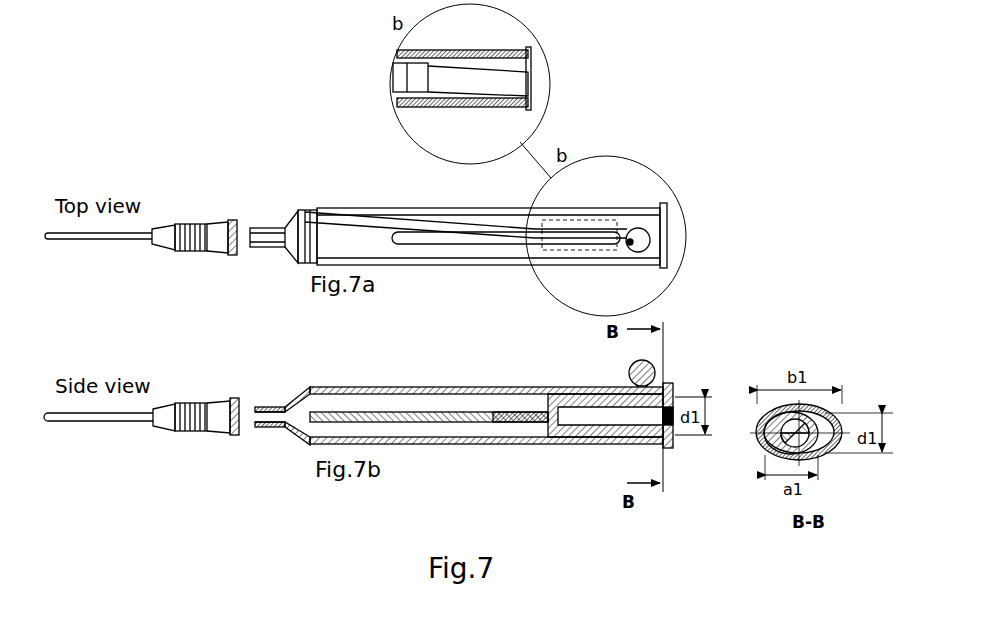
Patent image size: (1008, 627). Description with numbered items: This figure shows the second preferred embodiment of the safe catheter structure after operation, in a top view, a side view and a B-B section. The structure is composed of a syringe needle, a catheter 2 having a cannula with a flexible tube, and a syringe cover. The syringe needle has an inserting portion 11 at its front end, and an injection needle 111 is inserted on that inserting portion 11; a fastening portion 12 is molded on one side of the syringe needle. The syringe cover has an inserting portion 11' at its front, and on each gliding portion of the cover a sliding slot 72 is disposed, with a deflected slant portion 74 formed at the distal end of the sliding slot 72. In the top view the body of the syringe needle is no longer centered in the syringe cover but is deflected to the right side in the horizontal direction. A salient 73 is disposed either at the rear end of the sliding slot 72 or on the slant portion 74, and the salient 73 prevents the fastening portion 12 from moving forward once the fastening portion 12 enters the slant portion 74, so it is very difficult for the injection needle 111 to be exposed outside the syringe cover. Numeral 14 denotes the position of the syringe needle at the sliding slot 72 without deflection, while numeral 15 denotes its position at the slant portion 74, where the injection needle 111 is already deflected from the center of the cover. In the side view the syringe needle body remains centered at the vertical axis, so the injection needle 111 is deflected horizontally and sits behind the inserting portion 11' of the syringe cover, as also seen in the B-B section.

In FIG. 7A, the catheter 2 is at (163, 254).
In FIG. 7B, the catheter 2 is at (164, 434).
In FIG. 7A, the inserting portion 11' is at (268, 215).
In FIG. 7B, the inserting portion 11' is at (265, 393).
In FIG. 7B, the inserting portion 11 is at (517, 389).
In FIG. 7B, the injection needle 111 is at (427, 410).
In FIG. 7B, the fastening portion 12 is at (643, 361).
In FIG. 7A, the position of syringe needle at sliding slot without deflection 14 is at (466, 54).
In FIG. 7A, the position of syringe needle at slant portion 15 is at (514, 62).
In FIG. 7A, the sliding slot 72 is at (589, 222).
In FIG. 7A, the salient 73 is at (628, 248).
In FIG. 7A, the slant portion 74 is at (637, 255).